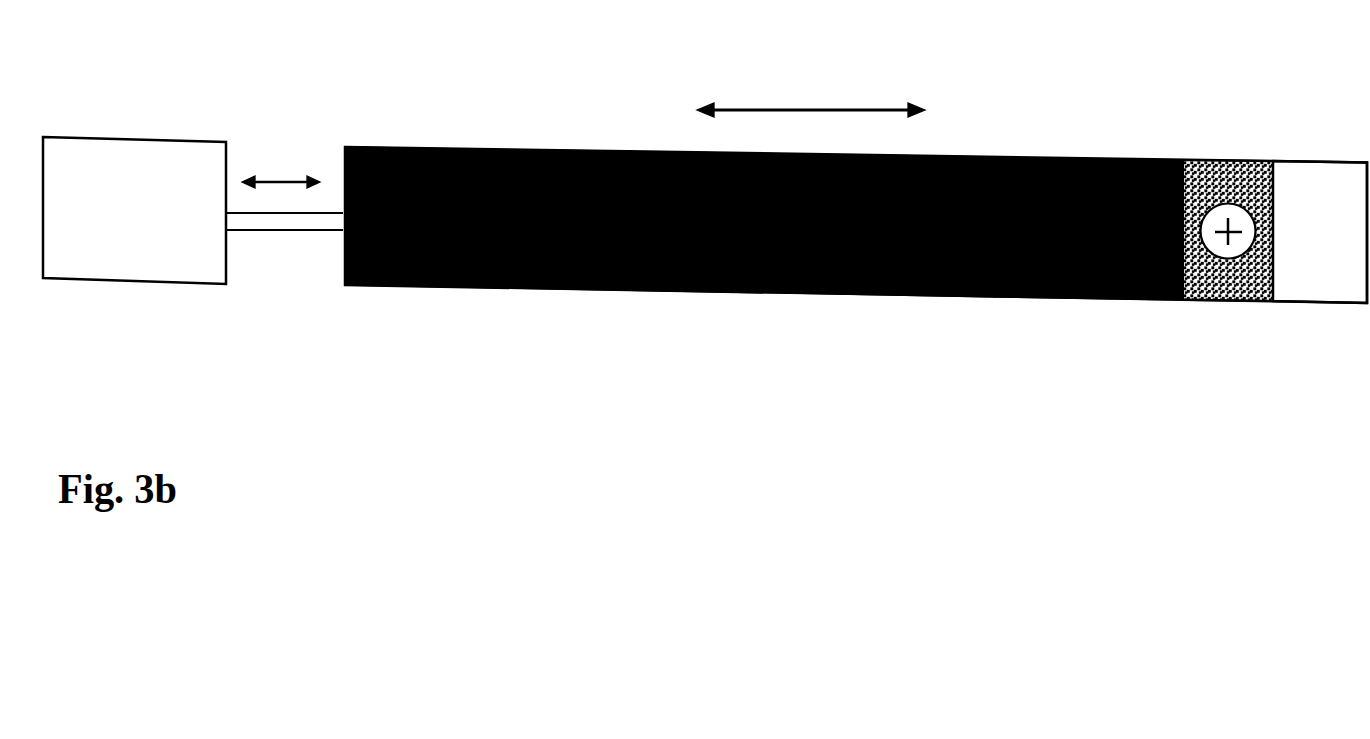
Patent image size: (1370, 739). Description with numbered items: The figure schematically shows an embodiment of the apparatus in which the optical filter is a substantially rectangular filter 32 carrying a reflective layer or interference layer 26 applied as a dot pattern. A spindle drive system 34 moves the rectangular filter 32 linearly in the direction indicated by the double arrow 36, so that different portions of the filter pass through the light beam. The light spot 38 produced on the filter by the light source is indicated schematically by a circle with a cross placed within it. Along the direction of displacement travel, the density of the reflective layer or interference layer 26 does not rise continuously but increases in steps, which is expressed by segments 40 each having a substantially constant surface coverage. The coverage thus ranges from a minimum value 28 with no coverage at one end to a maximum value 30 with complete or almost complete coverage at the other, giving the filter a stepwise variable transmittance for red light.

The reflective layer or interference layer 26 is at (1040, 230).
The minimum value 28 is at (1313, 267).
The maximum value 30 is at (390, 287).
The rectangular filter 32 is at (510, 150).
The spindle drive system 34 is at (135, 212).
The double arrow 36 is at (818, 108).
The light spot 38 is at (1217, 222).
The segments 40 is at (667, 291).